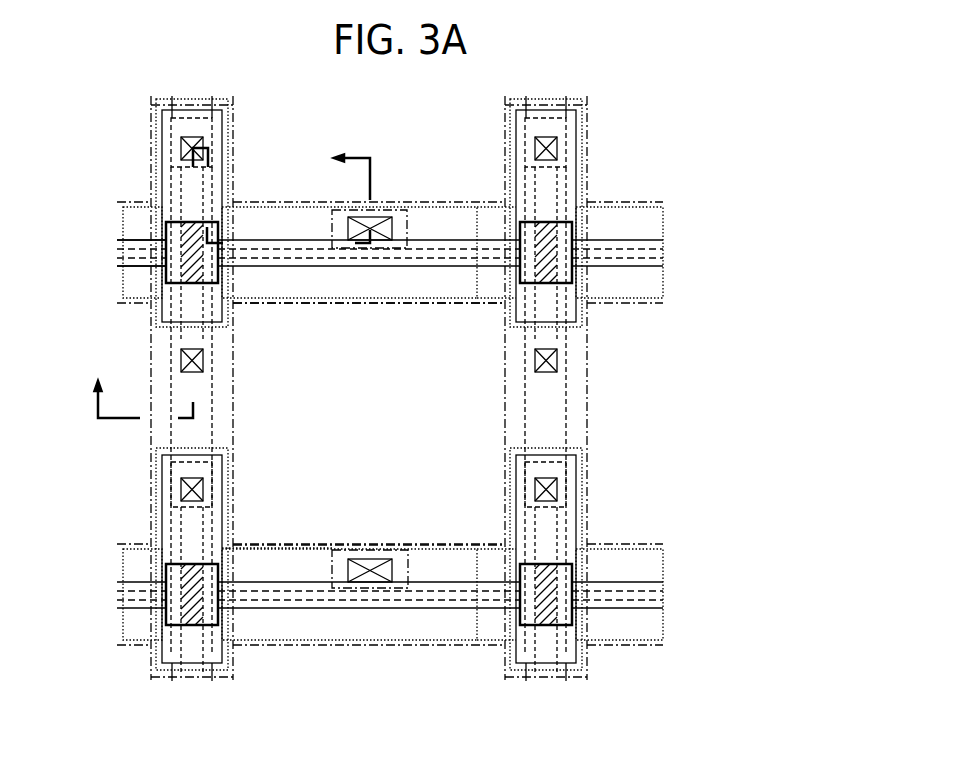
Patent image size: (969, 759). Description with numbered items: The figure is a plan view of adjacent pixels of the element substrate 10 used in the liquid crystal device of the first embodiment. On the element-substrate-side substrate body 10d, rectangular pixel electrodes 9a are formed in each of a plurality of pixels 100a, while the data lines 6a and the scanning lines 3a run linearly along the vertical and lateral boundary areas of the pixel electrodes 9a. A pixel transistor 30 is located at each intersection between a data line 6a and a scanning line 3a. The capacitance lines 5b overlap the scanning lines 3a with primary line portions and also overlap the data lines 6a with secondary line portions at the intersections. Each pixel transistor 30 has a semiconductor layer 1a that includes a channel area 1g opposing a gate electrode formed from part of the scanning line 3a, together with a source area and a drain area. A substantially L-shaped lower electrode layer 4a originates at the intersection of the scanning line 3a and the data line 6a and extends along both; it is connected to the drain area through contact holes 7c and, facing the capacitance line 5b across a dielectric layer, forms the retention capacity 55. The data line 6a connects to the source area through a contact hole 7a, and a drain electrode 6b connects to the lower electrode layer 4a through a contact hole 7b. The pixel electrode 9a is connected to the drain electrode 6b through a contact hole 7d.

The element substrate 10 is at (384, 389).
The element-substrate-side substrate body 10d is at (710, 137).
The data line 6a is at (233, 84).
The capacitance line 5b is at (678, 202).
The scanning line 3a is at (101, 240).
The lower electrode layer 4a is at (398, 292).
The channel area 1g is at (186, 603).
The semiconductor layer 1a is at (214, 534).
The contact hole 7a is at (204, 356).
The contact hole 7c is at (204, 494).
The drain electrode 6b is at (388, 548).
The contact hole 7b is at (354, 399).
The contact hole 7d is at (368, 556).
The pixel transistor 30 is at (226, 221).
The retention capacity 55 is at (306, 570).
The pixel 100a is at (474, 424).
The pixel electrode 9a is at (425, 418).